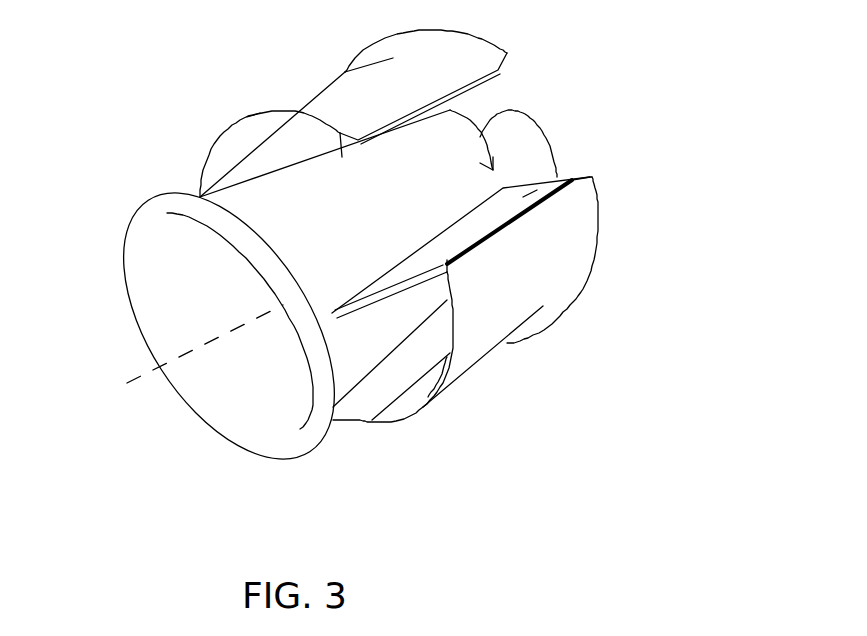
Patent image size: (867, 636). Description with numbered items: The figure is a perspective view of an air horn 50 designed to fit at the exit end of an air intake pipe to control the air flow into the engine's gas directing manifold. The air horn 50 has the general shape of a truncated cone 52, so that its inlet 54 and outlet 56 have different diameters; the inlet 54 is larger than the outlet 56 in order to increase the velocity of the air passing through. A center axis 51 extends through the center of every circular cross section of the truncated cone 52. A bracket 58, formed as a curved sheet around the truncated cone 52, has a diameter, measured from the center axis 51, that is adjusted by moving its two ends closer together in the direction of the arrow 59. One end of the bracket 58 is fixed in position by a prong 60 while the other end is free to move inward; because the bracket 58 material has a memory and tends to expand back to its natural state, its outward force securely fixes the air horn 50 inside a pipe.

The air horn 50 is at (662, 55).
The center axis 51 is at (163, 367).
The truncated cone 52 is at (263, 207).
The inlet 54 is at (193, 367).
The outlet 56 is at (547, 137).
The bracket 58 is at (333, 95).
The arrow 59 is at (480, 135).
The prong 60 is at (553, 177).